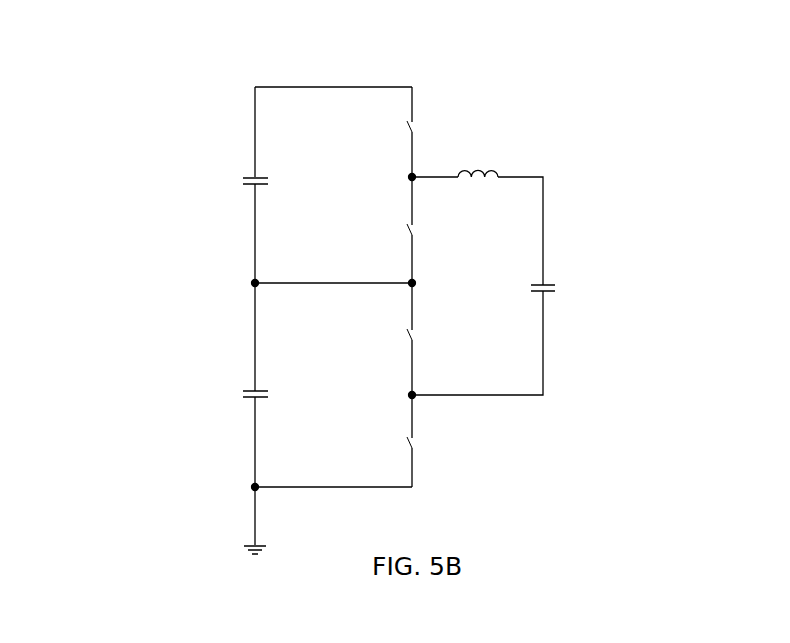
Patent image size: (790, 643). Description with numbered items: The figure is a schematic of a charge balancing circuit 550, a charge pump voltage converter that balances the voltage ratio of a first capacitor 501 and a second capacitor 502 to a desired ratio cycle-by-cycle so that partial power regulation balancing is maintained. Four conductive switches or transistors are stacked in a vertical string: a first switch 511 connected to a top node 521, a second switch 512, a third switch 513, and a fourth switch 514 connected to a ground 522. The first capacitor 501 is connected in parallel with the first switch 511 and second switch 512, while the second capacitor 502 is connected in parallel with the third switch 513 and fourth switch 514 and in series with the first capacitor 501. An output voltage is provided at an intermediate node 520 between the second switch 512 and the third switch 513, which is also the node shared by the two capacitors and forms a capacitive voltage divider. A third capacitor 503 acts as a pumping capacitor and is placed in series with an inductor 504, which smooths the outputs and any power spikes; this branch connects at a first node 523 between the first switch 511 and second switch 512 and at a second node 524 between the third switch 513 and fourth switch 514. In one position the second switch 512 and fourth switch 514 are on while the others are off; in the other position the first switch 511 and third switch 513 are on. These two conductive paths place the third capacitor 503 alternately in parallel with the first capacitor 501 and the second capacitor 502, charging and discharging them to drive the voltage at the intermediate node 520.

The first capacitor 501 is at (246, 168).
The second capacitor 502 is at (247, 385).
The third capacitor 503 is at (558, 289).
The inductor 504 is at (480, 166).
The first switch 511 is at (415, 131).
The second switch 512 is at (404, 239).
The third switch 513 is at (404, 340).
The fourth switch 514 is at (418, 461).
The intermediate node 520 is at (252, 284).
The top node 521 is at (342, 87).
The ground 522 is at (258, 536).
The first node 523 is at (408, 176).
The second node 524 is at (409, 396).
The charge balancing circuit 550 is at (165, 225).